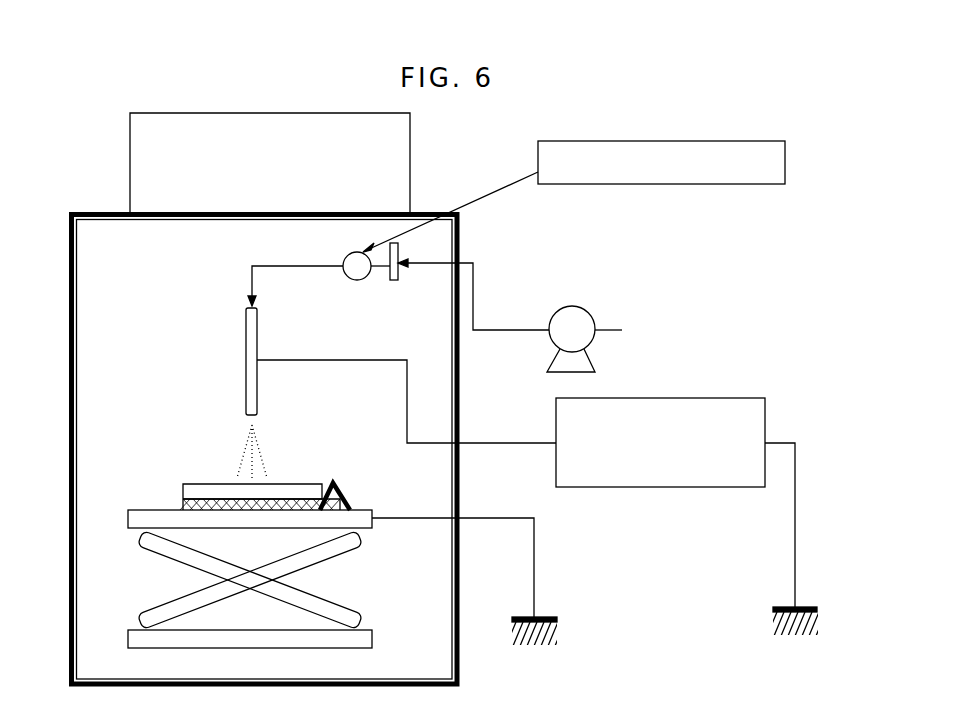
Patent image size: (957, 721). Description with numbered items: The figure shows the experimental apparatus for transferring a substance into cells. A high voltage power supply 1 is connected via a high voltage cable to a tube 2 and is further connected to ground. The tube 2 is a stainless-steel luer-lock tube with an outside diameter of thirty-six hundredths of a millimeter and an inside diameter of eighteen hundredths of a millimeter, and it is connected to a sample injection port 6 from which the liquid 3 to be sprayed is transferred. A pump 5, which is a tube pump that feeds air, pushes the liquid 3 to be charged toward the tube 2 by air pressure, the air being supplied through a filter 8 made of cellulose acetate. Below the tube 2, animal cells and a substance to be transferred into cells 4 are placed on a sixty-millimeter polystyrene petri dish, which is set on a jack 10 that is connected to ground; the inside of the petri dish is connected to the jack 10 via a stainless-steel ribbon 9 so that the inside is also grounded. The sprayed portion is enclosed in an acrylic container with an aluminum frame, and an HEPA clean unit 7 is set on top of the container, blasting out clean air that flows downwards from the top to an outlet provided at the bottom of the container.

The high voltage power supply 1 is at (660, 465).
The tube 2 is at (257, 393).
The liquid 3 is at (574, 196).
The animal cells and substance to be transferred into cells 4 is at (249, 494).
The pump 5 is at (584, 339).
The sample injection port 6 is at (357, 282).
The HEPA clean unit 7 is at (282, 163).
The filter 8 is at (391, 277).
The stainless-steel ribbon 9 is at (336, 494).
The jack 10 is at (259, 579).